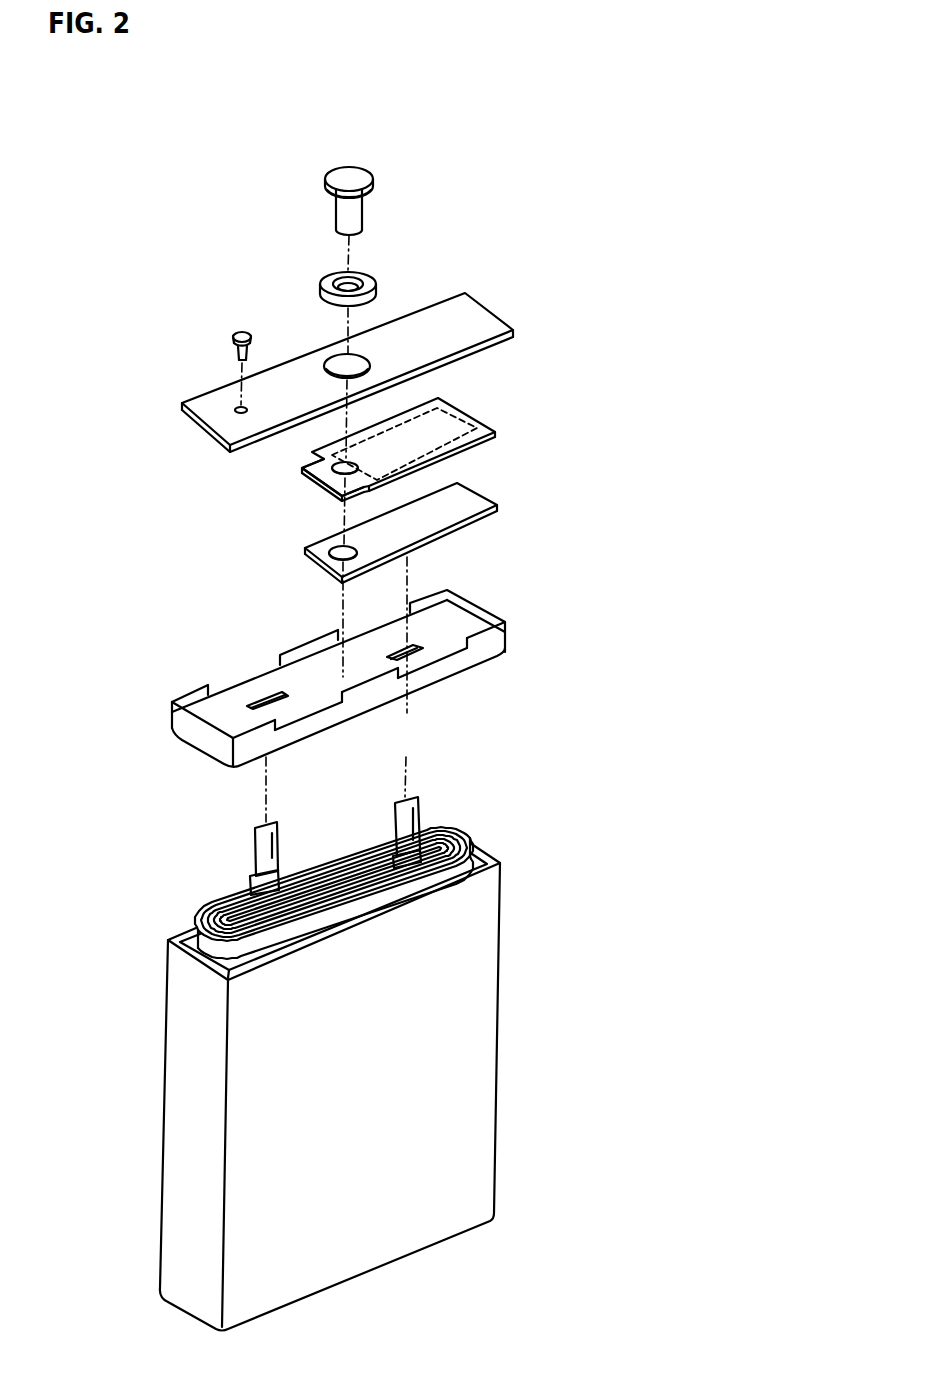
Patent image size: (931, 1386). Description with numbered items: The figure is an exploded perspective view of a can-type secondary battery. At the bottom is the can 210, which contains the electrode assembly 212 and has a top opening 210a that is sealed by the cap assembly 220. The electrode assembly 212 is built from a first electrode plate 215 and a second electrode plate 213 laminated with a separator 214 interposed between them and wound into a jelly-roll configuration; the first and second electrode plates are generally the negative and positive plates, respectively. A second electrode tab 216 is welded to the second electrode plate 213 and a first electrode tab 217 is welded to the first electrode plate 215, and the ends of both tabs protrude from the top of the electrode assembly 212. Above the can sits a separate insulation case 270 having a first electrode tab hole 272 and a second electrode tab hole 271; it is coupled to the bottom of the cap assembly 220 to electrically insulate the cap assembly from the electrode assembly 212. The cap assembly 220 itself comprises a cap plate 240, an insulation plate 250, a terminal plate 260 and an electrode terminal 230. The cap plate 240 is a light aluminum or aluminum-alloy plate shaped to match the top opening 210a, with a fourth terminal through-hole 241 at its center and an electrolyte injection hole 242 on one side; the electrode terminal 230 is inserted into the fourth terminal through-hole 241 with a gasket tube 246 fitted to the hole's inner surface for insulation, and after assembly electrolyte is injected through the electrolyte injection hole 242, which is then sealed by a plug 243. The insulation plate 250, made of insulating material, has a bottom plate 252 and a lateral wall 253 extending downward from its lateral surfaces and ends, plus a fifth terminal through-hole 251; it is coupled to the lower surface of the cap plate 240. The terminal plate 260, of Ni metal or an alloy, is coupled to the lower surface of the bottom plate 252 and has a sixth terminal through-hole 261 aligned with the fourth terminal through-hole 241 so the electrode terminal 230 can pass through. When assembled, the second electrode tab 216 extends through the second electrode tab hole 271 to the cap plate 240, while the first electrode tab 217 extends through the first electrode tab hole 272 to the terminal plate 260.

The can 210 is at (385, 1079).
The top opening 210a is at (480, 857).
The electrode assembly 212 is at (374, 841).
The second electrode plate 213 is at (470, 838).
The separator 214 is at (462, 830).
The first electrode plate 215 is at (334, 845).
The second electrode tab 216 is at (270, 853).
The first electrode tab 217 is at (407, 818).
The cap assembly 220 is at (587, 168).
The electrode terminal 230 is at (360, 180).
The cap plate 240 is at (470, 312).
The fourth terminal through-hole 241 is at (335, 360).
The electrolyte injection hole 242 is at (235, 408).
The plug 243 is at (235, 335).
The gasket tube 246 is at (332, 283).
The insulation plate 250 is at (392, 448).
The fifth terminal through-hole 251 is at (315, 478).
The bottom plate 252 is at (302, 470).
The lateral wall 253 is at (475, 418).
The terminal plate 260 is at (472, 490).
The sixth terminal through-hole 261 is at (320, 565).
The insulation case 270 is at (175, 722).
The second electrode tab hole 271 is at (260, 695).
The first electrode tab hole 272 is at (415, 645).